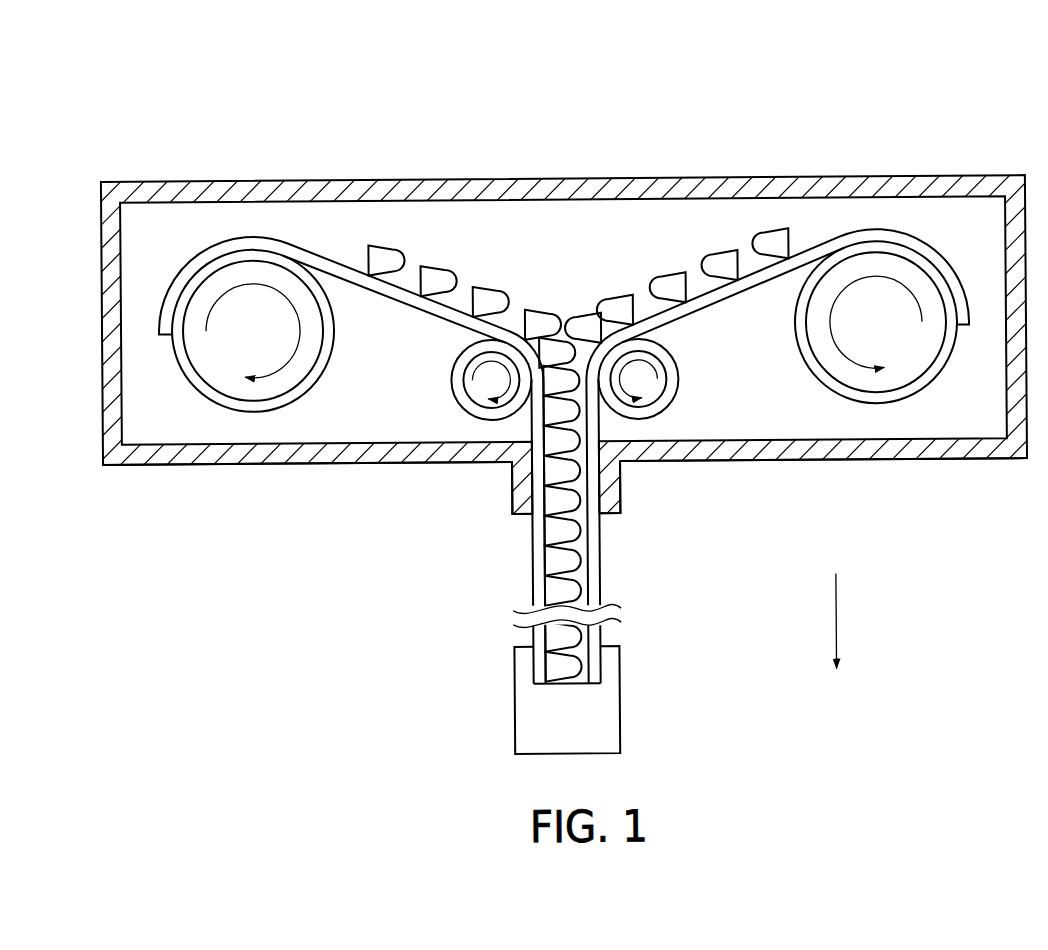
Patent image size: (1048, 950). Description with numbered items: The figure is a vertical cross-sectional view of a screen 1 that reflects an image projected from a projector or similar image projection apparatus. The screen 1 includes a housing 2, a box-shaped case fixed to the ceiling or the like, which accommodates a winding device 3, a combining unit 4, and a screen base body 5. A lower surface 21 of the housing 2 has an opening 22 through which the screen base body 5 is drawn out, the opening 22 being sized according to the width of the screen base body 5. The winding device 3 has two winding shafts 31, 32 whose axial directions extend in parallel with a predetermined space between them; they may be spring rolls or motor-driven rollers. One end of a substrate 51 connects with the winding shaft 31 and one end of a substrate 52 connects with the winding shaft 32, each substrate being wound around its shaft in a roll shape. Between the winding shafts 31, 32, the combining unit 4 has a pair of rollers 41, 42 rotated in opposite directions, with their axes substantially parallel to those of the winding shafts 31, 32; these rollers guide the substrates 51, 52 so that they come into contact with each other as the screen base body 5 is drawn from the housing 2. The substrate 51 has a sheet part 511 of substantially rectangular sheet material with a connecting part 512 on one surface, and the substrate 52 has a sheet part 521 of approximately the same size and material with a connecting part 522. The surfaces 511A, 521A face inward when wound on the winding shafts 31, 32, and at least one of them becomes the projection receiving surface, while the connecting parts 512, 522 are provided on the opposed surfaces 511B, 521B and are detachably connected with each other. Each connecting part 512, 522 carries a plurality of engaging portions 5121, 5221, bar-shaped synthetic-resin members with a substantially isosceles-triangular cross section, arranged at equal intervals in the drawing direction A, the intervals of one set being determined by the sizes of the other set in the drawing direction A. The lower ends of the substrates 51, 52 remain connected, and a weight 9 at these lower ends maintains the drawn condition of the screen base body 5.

The screen 1 is at (982, 137).
The housing 2 is at (853, 187).
The lower surface 21 is at (820, 466).
The opening 22 is at (593, 517).
The winding device 3 is at (548, 386).
The winding shaft 31 is at (221, 397).
The winding shaft 32 is at (910, 399).
The combining unit 4 is at (562, 391).
The roller 41 is at (453, 394).
The roller 42 is at (672, 398).
The screen base body 5 is at (698, 561).
The substrate 51 is at (513, 607).
The substrate 52 is at (618, 617).
The sheet part 511 is at (337, 449).
The surface 511A is at (532, 571).
The surface 511B is at (403, 283).
The connecting part 512 is at (369, 392).
The engaging portion 5121 is at (432, 274).
The sheet part 521 is at (786, 442).
The surface 521A is at (600, 575).
The surface 521B is at (727, 288).
The connecting part 522 is at (767, 386).
The engaging portion 5221 is at (586, 328).
The weight 9 is at (612, 725).
The drawing direction A is at (840, 621).